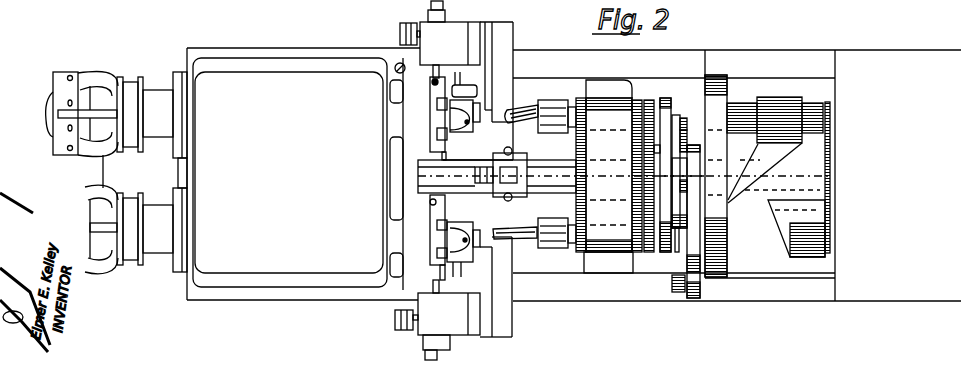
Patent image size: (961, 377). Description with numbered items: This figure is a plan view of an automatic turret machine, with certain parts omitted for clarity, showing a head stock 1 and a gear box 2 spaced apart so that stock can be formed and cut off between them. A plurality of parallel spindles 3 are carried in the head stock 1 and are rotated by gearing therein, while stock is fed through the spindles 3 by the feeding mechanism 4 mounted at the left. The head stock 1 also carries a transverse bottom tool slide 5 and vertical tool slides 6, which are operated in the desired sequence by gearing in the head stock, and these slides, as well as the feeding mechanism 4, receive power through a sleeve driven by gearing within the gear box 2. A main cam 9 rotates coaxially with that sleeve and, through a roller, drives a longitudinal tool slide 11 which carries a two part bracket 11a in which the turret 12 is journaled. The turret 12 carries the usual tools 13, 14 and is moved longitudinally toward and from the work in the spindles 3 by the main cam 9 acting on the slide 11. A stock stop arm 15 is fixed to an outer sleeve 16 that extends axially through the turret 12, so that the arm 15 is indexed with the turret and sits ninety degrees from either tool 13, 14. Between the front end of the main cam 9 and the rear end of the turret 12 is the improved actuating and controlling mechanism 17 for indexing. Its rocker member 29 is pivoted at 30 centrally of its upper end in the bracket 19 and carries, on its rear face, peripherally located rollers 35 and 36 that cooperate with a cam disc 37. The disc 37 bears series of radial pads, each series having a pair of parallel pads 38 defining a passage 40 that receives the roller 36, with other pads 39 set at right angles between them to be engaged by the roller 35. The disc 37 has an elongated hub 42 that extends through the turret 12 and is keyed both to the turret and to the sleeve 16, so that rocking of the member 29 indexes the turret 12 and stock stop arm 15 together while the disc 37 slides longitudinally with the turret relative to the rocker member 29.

The head stock 1 is at (282, 80).
The gear box 2 is at (925, 61).
The spindles 3 is at (162, 132).
The feeding mechanism 4 is at (119, 71).
The transverse bottom tool slide 5 is at (473, 32).
The vertical tool slides 6 is at (437, 118).
The main cam 9 is at (780, 105).
The longitudinal tool slide 11 is at (672, 88).
The two part bracket 11a is at (613, 107).
The turret 12 is at (582, 98).
The tool 13 is at (527, 240).
The tool 14 is at (520, 112).
The stock stop arm 15 is at (503, 155).
The outer sleeve 16 is at (532, 168).
The actuating and controlling mechanism 17 is at (678, 114).
The bracket 19 is at (717, 78).
The rocker member 29 is at (695, 298).
The pivot 30 is at (696, 176).
The roller 35 is at (678, 292).
The roller 36 is at (687, 221).
The cam disc 37 is at (663, 253).
The pads 38 is at (677, 230).
The pads 39 is at (679, 143).
The passage 40 is at (683, 123).
The elongated hub 42 is at (650, 180).